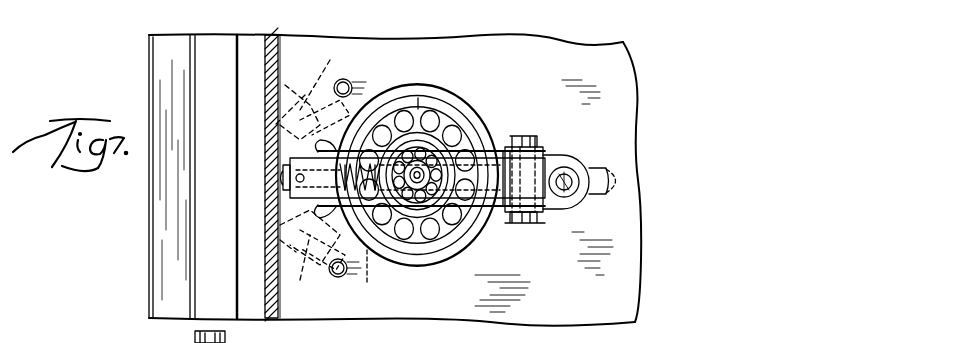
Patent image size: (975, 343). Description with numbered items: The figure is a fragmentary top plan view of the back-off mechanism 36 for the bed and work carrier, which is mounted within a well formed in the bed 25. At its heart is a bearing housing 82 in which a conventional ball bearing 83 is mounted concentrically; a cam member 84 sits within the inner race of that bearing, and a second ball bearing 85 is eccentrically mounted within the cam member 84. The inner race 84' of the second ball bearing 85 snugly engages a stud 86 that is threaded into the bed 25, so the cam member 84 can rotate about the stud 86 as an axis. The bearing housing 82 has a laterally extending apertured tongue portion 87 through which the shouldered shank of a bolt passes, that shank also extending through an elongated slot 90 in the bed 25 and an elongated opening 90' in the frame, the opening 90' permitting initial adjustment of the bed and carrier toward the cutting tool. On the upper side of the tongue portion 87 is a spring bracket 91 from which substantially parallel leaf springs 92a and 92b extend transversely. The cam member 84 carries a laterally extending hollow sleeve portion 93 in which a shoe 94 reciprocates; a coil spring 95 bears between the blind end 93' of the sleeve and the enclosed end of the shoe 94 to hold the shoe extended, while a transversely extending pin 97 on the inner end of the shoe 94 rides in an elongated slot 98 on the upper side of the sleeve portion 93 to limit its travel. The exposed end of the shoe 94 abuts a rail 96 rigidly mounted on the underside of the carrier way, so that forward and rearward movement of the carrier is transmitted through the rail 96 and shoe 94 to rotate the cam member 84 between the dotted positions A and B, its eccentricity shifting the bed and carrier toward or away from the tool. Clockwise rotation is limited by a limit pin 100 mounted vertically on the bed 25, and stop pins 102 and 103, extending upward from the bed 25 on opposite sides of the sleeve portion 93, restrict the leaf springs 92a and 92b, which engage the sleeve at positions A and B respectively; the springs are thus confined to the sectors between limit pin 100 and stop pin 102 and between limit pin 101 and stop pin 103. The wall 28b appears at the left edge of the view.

The rail 96 is at (271, 52).
The limit pin 100 is at (346, 79).
The limit pin 101 is at (336, 278).
The stop pin 102 is at (272, 104).
The stop pin 103 is at (283, 250).
The frame wall 28b is at (205, 244).
The bearing housing 82 is at (494, 131).
The ball bearing 83 is at (438, 118).
The leaf spring 92a is at (362, 108).
The leaf spring 92b is at (488, 225).
The second ball bearing 85 is at (438, 210).
The cam member 84 is at (414, 134).
The inner race 84' is at (390, 278).
The stud 86 is at (412, 195).
The blind end 93' is at (377, 105).
The hollow sleeve portion 93 is at (286, 230).
The shoe 94 is at (285, 165).
The pin 97 is at (300, 185).
The elongated slot 98 is at (292, 168).
The spring bracket 91 is at (541, 150).
The tongue portion 87 is at (578, 170).
The elongated slot 90 is at (624, 175).
The elongated opening 90' is at (640, 190).
The back-off mechanism 36 is at (494, 84).
The bed 25 is at (611, 132).
The coil spring 95 is at (363, 277).